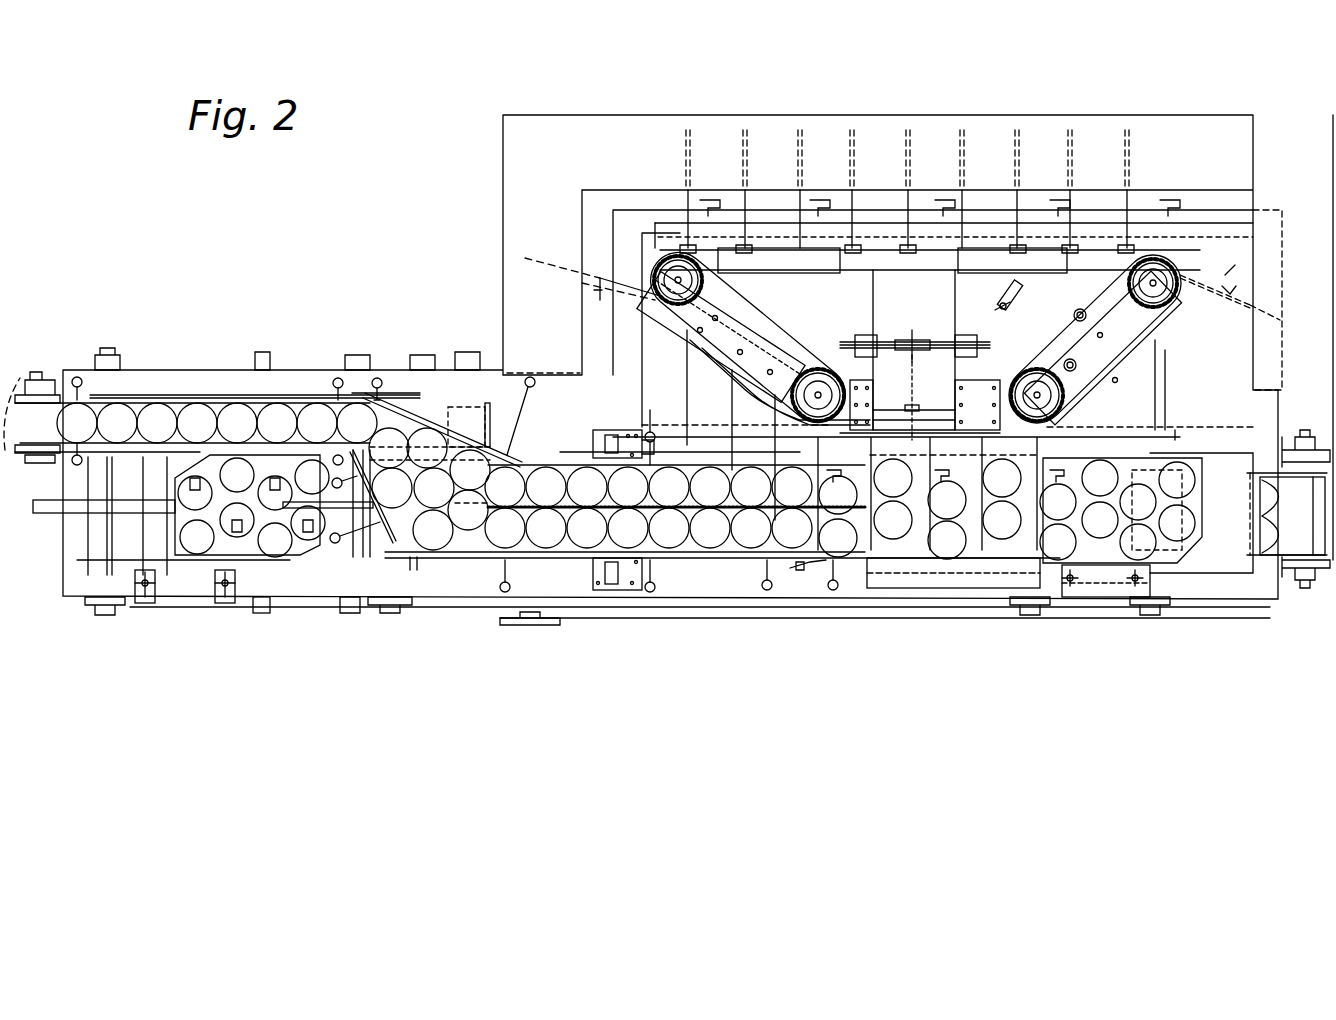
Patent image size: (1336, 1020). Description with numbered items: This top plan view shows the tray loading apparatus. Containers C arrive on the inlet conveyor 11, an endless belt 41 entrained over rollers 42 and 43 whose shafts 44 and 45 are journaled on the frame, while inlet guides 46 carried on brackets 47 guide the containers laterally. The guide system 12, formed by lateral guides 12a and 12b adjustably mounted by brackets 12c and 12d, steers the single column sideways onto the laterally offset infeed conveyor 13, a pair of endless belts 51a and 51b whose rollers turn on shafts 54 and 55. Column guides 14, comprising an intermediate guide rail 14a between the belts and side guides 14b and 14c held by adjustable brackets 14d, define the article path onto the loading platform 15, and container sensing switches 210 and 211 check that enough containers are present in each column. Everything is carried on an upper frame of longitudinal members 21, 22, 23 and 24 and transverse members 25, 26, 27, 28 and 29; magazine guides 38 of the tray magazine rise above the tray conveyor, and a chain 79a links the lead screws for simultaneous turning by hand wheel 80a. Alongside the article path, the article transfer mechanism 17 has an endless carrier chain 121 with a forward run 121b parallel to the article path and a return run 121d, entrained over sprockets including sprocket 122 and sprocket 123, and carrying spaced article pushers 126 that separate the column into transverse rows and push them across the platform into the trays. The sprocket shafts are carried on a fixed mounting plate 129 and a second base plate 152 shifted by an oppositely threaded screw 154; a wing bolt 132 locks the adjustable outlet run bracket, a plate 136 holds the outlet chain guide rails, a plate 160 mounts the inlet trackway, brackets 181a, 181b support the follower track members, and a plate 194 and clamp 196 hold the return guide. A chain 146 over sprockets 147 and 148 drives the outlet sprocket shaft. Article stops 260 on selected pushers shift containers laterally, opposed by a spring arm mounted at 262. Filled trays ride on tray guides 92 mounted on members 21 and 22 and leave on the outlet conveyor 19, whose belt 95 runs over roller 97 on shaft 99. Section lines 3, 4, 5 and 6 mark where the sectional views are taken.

The inlet conveyor 11 is at (14, 432).
The guide system 12 is at (425, 405).
The lateral guide 12a is at (469, 425).
The lateral guide 12b is at (390, 552).
The bracket 12c is at (377, 376).
The bracket 12d is at (325, 565).
The infeed conveyor mechanism 13 is at (570, 445).
The column guides 14 is at (576, 567).
The intermediate guide rail 14a is at (667, 529).
The side guide 14b is at (520, 552).
The side guide 14c is at (578, 458).
The bracket 14d is at (655, 430).
The loading platform 15 is at (925, 585).
The article transfer mechanism 17 is at (848, 346).
The outlet conveyor mechanism 19 is at (1227, 556).
The longitudinal frame member 21 is at (1197, 600).
The longitudinal frame member 22 is at (1208, 435).
The longitudinal frame member 23 is at (1225, 215).
The longitudinal frame member 24 is at (135, 372).
The transverse frame member 25 is at (1270, 405).
The transverse frame member 26 is at (600, 345).
The transverse frame member 27 is at (434, 565).
The transverse frame member 28 is at (340, 575).
The transverse frame member 29 is at (72, 570).
The magazine guides 38 is at (45, 513).
The endless belt 41 is at (405, 410).
The roller 42 is at (485, 409).
The roller 43 is at (32, 405).
The shaft 44 is at (462, 350).
The shaft 45 is at (38, 380).
The inlet guides 46 is at (215, 405).
The brackets 47 is at (336, 390).
The endless belt 51a is at (478, 552).
The endless belt 51b is at (510, 468).
The shaft 54 is at (1030, 615).
The shaft 55 is at (390, 610).
The chain 79a is at (897, 615).
The hand wheel 80a is at (520, 625).
The tray guides 92 is at (1110, 597).
The belt 95 is at (1233, 534).
The roller 97 is at (1318, 460).
The shaft 99 is at (1308, 590).
The carrier chain 121 is at (660, 275).
The forward run 121b is at (935, 412).
The return run 121d is at (940, 255).
The sprocket 122 is at (698, 280).
The sprocket 123 is at (802, 378).
The article pushers 126 is at (1170, 385).
The fixed mounting plate 129 is at (955, 298).
The wing bolt 132 is at (1070, 320).
The plate 136 is at (1165, 340).
The chain 146 is at (1062, 344).
The sprocket 147 is at (1027, 380).
The sprocket 148 is at (1153, 270).
The second base plate 152 is at (860, 295).
The oppositely threaded screw 154 is at (922, 338).
The plate 160 is at (715, 355).
The brackets 181a is at (975, 400).
The mounting plate 181b is at (862, 398).
The plate 194 is at (992, 245).
The clamp 196 is at (1010, 296).
The container sensing switch 210 is at (612, 435).
The container sensing switch 211 is at (610, 590).
The article stops 260 is at (812, 575).
The spring arm mount 262 is at (800, 572).
The containers C is at (160, 405).
The section line 3 is at (1040, 303).
The section line 4 is at (777, 310).
The section line 5 is at (921, 404).
The section line 6 is at (1008, 200).